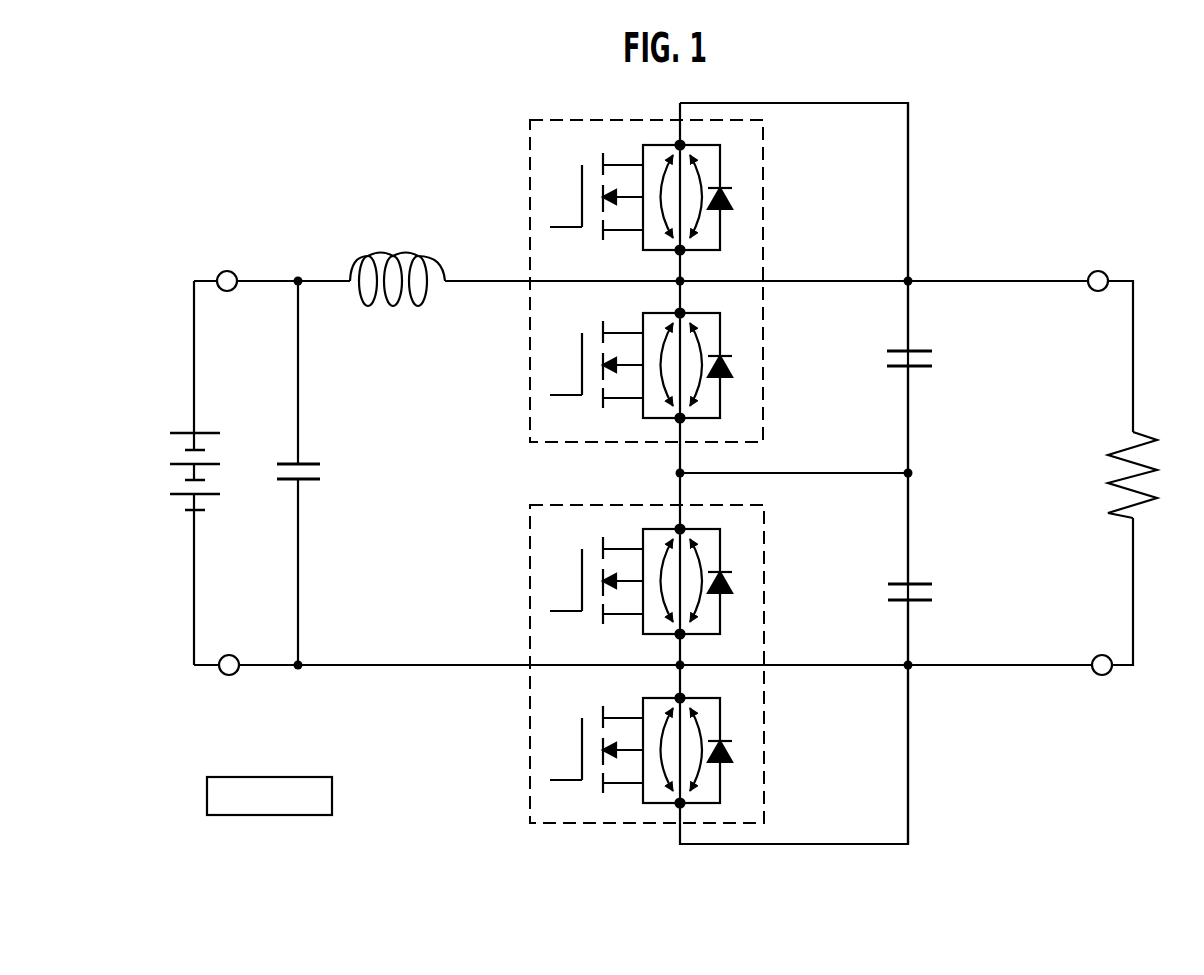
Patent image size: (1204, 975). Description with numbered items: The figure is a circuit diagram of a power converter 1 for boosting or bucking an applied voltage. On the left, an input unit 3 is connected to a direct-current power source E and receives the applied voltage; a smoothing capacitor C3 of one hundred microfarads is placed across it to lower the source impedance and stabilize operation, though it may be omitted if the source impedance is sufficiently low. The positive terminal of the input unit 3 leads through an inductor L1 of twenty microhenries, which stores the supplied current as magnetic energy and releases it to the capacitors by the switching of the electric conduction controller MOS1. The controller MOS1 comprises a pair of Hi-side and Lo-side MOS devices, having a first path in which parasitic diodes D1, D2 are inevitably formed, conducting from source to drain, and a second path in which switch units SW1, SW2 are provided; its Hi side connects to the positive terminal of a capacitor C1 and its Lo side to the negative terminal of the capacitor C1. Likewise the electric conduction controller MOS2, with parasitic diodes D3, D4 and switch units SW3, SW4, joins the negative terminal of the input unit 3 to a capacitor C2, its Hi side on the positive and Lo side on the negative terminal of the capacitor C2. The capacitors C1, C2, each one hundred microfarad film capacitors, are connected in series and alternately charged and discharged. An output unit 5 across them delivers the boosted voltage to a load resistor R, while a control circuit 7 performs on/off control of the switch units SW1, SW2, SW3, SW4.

The power converter 1 is at (938, 90).
The input unit 3 is at (219, 268).
The output unit 5 is at (1110, 271).
The control circuit 7 is at (268, 777).
The direct-current power source E is at (182, 471).
The capacitor C3 is at (316, 469).
The inductor L1 is at (397, 280).
The capacitor C1 is at (926, 359).
The capacitor C2 is at (926, 586).
The load resistor R is at (1147, 475).
The electric conduction controller MOS1 is at (696, 256).
The electric conduction controller MOS2 is at (696, 635).
The switch unit SW1 is at (730, 97).
The switch unit SW2 is at (775, 283).
The switch unit SW3 is at (728, 504).
The switch unit SW4 is at (772, 672).
The parasitic diode D1 is at (733, 183).
The parasitic diode D2 is at (733, 351).
The parasitic diode D3 is at (733, 568).
The parasitic diode D4 is at (733, 736).